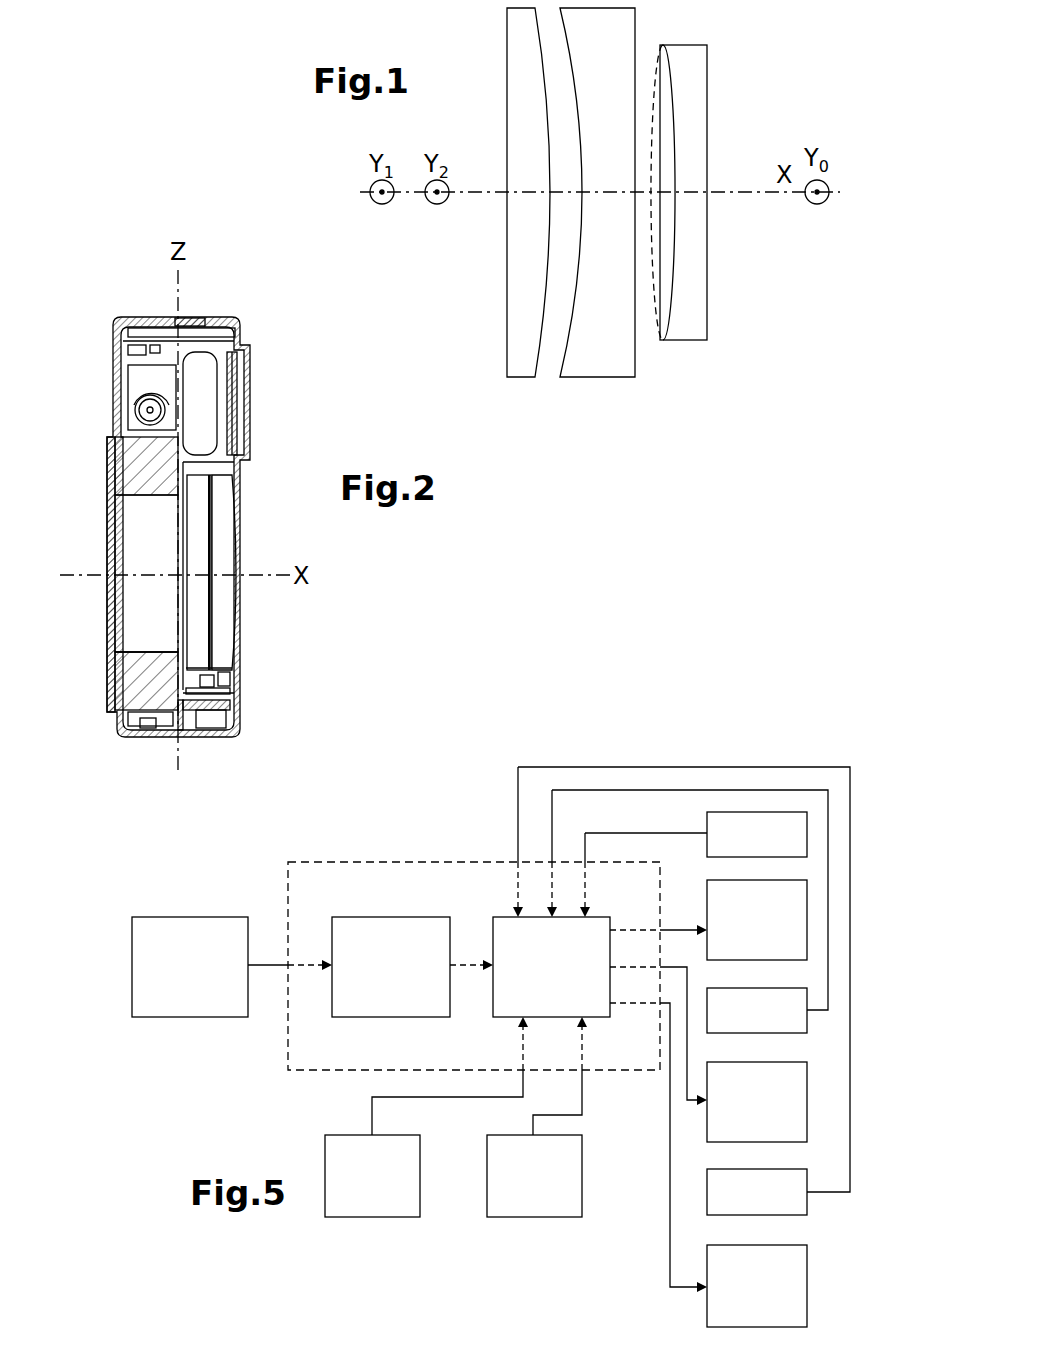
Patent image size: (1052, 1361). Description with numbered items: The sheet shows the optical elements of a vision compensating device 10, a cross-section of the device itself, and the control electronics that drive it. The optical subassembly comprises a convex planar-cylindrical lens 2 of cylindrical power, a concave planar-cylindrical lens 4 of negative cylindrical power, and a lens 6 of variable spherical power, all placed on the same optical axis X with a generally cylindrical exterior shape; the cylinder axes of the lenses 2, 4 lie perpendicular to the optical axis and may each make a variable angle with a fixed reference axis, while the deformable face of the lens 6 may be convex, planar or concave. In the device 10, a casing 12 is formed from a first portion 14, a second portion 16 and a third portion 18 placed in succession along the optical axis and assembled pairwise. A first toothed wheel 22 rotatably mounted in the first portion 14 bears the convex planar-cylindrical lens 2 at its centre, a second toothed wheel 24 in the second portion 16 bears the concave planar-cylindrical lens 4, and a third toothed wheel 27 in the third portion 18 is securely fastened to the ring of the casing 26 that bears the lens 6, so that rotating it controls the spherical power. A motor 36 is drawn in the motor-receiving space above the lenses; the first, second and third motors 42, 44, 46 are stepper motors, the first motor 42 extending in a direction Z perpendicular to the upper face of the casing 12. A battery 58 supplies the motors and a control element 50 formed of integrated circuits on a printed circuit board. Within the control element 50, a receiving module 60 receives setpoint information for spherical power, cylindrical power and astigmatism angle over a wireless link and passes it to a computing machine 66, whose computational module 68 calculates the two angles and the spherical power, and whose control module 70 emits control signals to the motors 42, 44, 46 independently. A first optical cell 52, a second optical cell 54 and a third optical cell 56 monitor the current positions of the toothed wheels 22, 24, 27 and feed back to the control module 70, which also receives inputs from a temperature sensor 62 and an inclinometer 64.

In FIG. 1, the convex planar-cylindrical lens 2 is at (507, 55).
In FIG. 2, the convex planar-cylindrical lens 2 is at (222, 556).
In FIG. 1, the concave planar-cylindrical lens 4 is at (635, 362).
In FIG. 2, the concave planar-cylindrical lens 4 is at (205, 513).
In FIG. 1, the lens of variable spherical power 6 is at (707, 97).
In FIG. 2, the lens of variable spherical power 6 is at (135, 540).
In FIG. 2, the vision compensating device 10 is at (197, 502).
In FIG. 2, the casing 12 is at (106, 331).
In FIG. 2, the first portion 14 is at (226, 322).
In FIG. 2, the second portion 16 is at (190, 318).
In FIG. 2, the third portion 18 is at (136, 322).
In FIG. 2, the first toothed wheel 22 is at (215, 664).
In FIG. 2, the second toothed wheel 24 is at (208, 630).
In FIG. 2, the casing of the variable spherical power lens 26 is at (128, 668).
In FIG. 2, the third toothed wheel 27 is at (150, 722).
In FIG. 2, the motor 36 is at (135, 412).
In FIG. 5, the first motor 42 is at (707, 890).
In FIG. 5, the second motor 44 is at (707, 1130).
In FIG. 5, the third motor 46 is at (707, 1314).
In FIG. 2, the control element 50 is at (232, 330).
In FIG. 5, the control element 50 is at (437, 910).
In FIG. 2, the first optical cell 52 is at (240, 690).
In FIG. 5, the first optical cell 52 is at (775, 812).
In FIG. 2, the second optical cell 54 is at (192, 706).
In FIG. 5, the second optical cell 54 is at (707, 1020).
In FIG. 5, the third optical cell 56 is at (807, 1203).
In FIG. 2, the battery 58 is at (205, 390).
In FIG. 5, the receiving module 60 is at (132, 990).
In FIG. 5, the temperature sensor 62 is at (362, 1217).
In FIG. 5, the inclinometer 64 is at (512, 1217).
In FIG. 5, the computing machine 66 is at (288, 1048).
In FIG. 5, the computational module 68 is at (423, 917).
In FIG. 5, the control module 70 is at (493, 930).